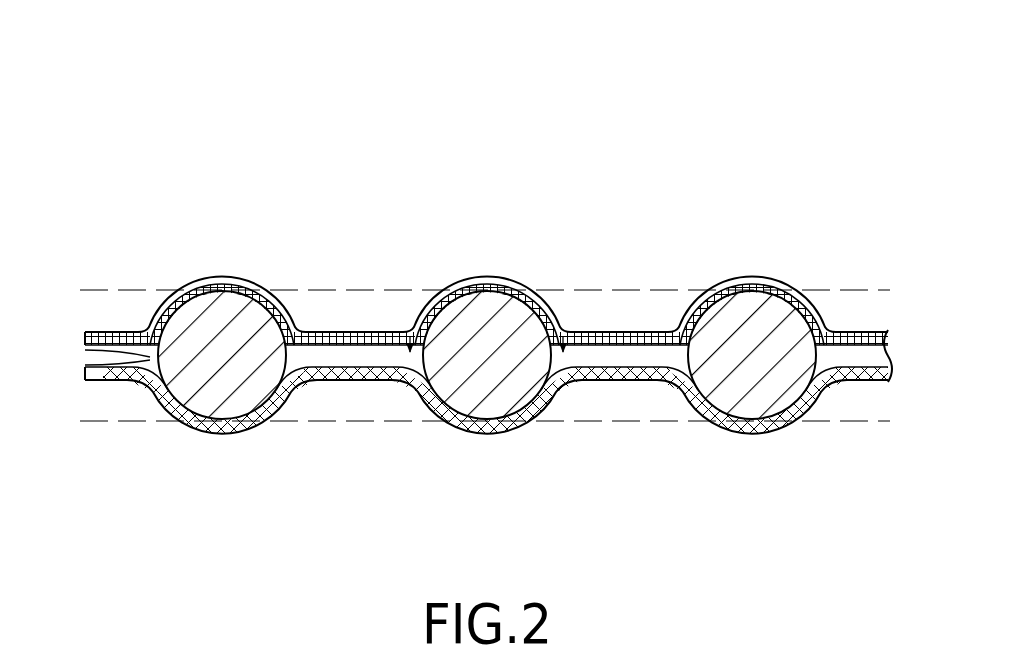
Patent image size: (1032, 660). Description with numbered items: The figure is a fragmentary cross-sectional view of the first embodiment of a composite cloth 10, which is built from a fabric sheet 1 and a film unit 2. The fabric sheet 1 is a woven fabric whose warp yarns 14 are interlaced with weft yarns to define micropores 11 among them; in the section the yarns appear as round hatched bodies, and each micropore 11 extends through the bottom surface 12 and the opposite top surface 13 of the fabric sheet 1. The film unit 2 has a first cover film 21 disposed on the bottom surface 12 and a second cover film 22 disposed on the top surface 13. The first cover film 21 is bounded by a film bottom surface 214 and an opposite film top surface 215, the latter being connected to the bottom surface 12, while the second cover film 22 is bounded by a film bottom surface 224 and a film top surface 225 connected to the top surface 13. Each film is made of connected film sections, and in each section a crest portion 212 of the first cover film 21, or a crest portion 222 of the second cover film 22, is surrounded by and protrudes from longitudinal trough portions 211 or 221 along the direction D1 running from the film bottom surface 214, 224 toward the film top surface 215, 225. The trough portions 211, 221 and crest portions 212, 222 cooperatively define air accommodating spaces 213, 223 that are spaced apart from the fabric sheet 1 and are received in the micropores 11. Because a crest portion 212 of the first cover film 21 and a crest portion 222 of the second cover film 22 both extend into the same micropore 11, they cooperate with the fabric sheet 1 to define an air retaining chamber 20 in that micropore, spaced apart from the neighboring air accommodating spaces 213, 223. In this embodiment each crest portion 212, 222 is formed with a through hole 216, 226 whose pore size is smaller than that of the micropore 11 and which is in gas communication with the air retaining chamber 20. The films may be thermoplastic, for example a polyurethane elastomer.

The fabric sheet 1 is at (822, 356).
The film unit 2 is at (812, 272).
The composite cloth 10 is at (195, 63).
The micropores 11 is at (537, 278).
The bottom surface 12 is at (167, 408).
The top surface 13 is at (178, 300).
The warp yarns 14 is at (233, 372).
The air retaining chamber 20 is at (383, 357).
The first cover film 21 is at (195, 432).
The second cover film 22 is at (200, 275).
The longitudinal trough portions 211 is at (215, 430).
The crest portion 212 is at (302, 383).
The air accommodating spaces 213 is at (332, 403).
The film bottom surface 214 is at (120, 382).
The film top surface 215 is at (88, 360).
The through hole 216 is at (357, 370).
The longitudinal trough portions 221 is at (233, 280).
The crest portion 222 is at (320, 337).
The air accommodating spaces 223 is at (393, 308).
The film bottom surface 224 is at (130, 333).
The film top surface 225 is at (88, 338).
The through hole 226 is at (353, 337).
The direction D1 is at (787, 75).